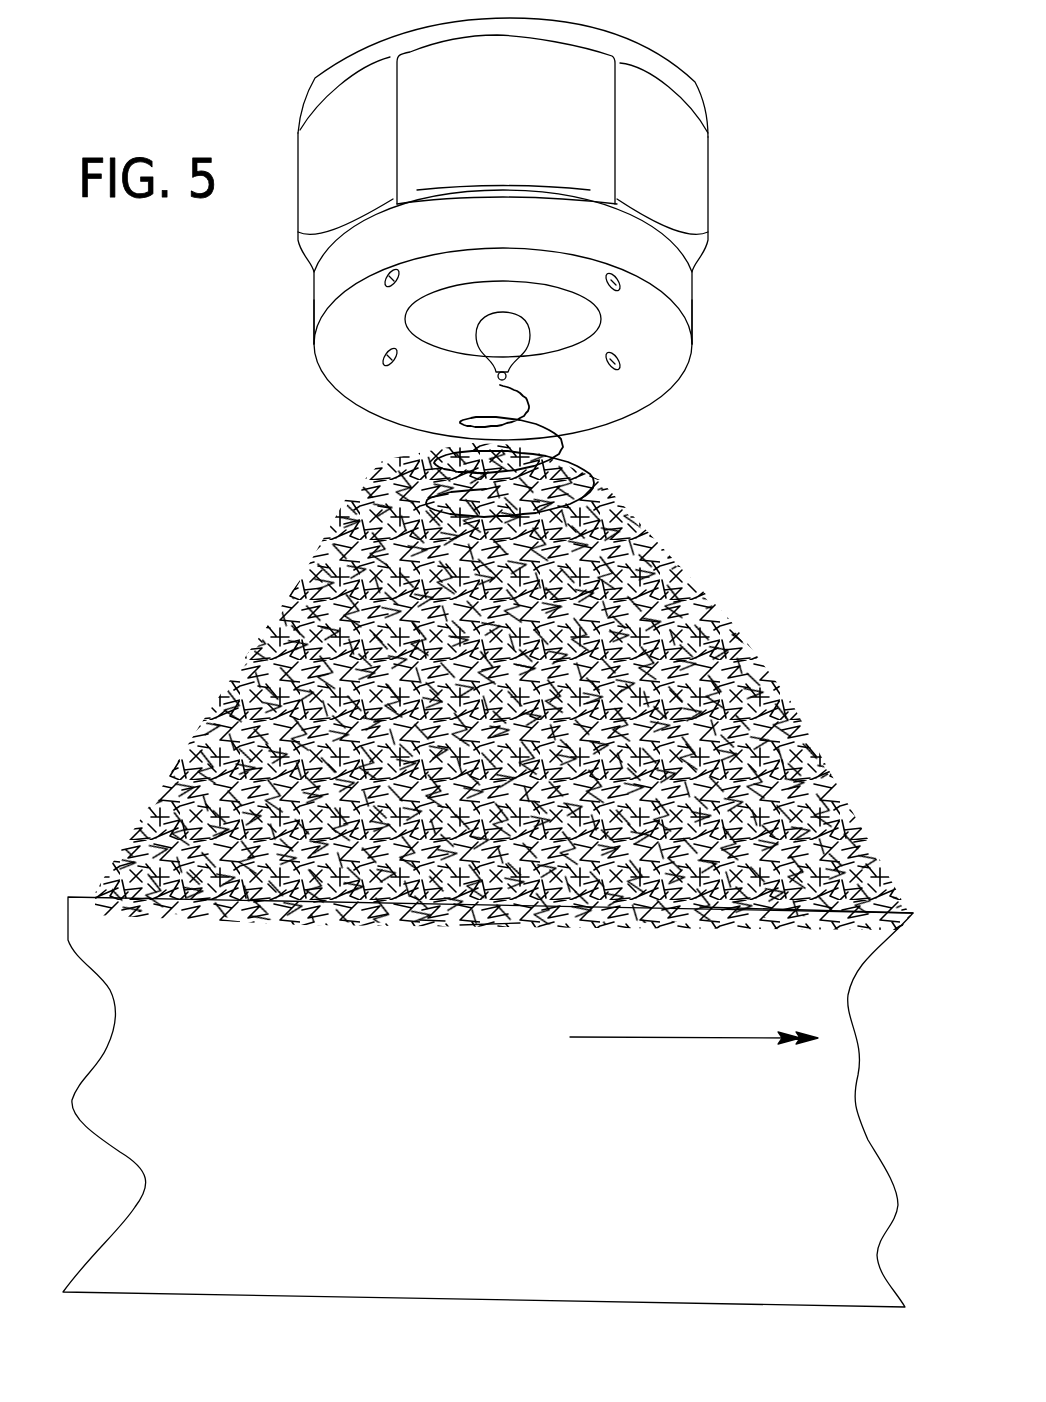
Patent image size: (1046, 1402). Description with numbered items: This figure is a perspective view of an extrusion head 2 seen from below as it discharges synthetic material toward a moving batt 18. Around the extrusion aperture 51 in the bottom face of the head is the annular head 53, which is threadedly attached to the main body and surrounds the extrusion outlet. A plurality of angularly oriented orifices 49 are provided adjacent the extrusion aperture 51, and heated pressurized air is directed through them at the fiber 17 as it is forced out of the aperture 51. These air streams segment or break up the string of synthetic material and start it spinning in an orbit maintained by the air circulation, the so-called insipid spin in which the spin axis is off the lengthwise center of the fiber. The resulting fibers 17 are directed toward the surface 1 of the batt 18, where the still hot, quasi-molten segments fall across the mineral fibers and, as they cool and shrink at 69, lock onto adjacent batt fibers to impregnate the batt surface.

The extrusion head 2 is at (545, 127).
The annular head 53 is at (675, 289).
The angled orifices 49 is at (392, 285).
The extrusion aperture 51 is at (464, 362).
The extruded fibers 17 is at (470, 735).
The batt 18 is at (833, 1103).
The surface of the batt 1 is at (897, 910).
The shrinkage of fiber 69 is at (490, 932).